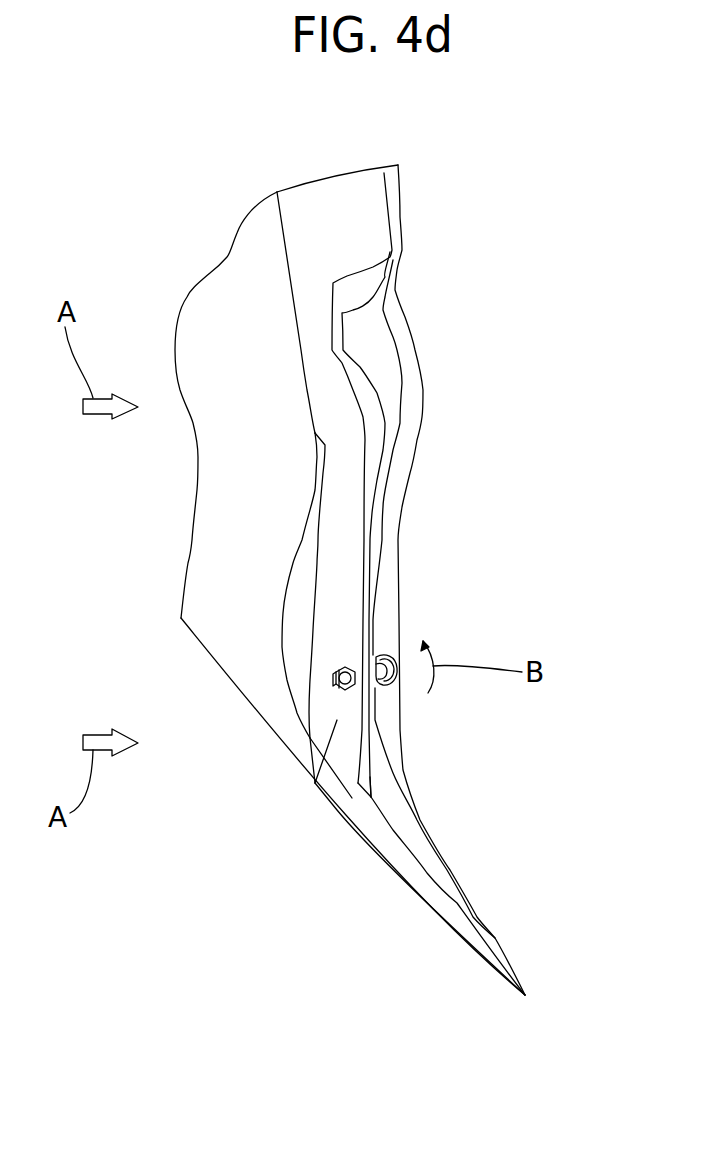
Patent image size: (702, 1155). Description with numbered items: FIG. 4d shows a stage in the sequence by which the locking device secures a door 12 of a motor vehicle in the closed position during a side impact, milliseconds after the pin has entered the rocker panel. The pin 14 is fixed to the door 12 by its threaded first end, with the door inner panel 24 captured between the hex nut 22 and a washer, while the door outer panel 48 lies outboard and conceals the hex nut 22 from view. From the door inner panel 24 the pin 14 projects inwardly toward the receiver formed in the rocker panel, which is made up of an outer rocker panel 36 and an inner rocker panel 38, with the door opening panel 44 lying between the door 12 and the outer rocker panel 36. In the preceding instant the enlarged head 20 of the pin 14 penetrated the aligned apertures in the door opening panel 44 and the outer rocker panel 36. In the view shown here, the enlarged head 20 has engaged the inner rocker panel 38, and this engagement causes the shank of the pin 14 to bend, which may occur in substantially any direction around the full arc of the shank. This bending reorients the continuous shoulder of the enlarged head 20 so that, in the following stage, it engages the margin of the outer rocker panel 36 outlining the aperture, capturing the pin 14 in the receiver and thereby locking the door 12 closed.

The door 12 is at (250, 747).
The pin 14 is at (383, 638).
The enlarged head 20 is at (390, 657).
The hex nut 22 is at (338, 665).
The door inner panel 24 is at (315, 783).
The outer rocker panel 36 is at (377, 735).
The inner rocker panel 38 is at (398, 705).
The door opening panel 44 is at (370, 775).
The door outer panel 48 is at (237, 632).